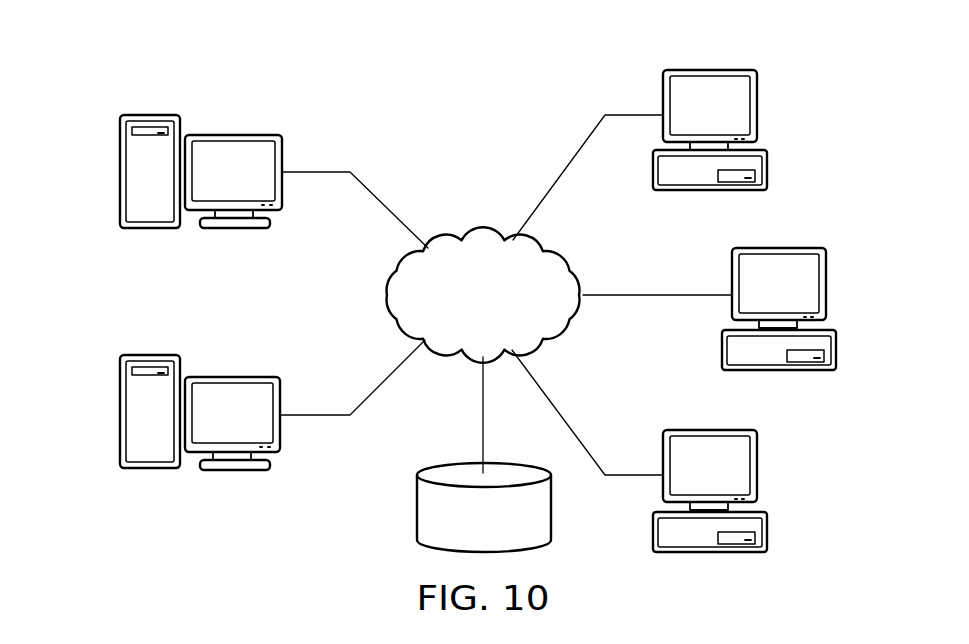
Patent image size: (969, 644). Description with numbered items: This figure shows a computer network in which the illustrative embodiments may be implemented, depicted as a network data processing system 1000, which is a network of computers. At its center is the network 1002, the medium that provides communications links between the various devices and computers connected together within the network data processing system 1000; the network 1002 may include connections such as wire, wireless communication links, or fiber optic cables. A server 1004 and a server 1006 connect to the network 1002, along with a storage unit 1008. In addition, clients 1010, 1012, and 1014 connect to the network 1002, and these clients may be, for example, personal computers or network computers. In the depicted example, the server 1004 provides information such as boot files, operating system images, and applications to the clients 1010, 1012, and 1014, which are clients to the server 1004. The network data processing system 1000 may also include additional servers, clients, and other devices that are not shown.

The network data processing system 1000 is at (349, 82).
The network 1002 is at (477, 232).
The server 1004 is at (118, 168).
The server 1006 is at (118, 411).
The storage unit 1008 is at (413, 509).
The client 1010 is at (768, 170).
The client 1012 is at (836, 350).
The client 1014 is at (768, 530).